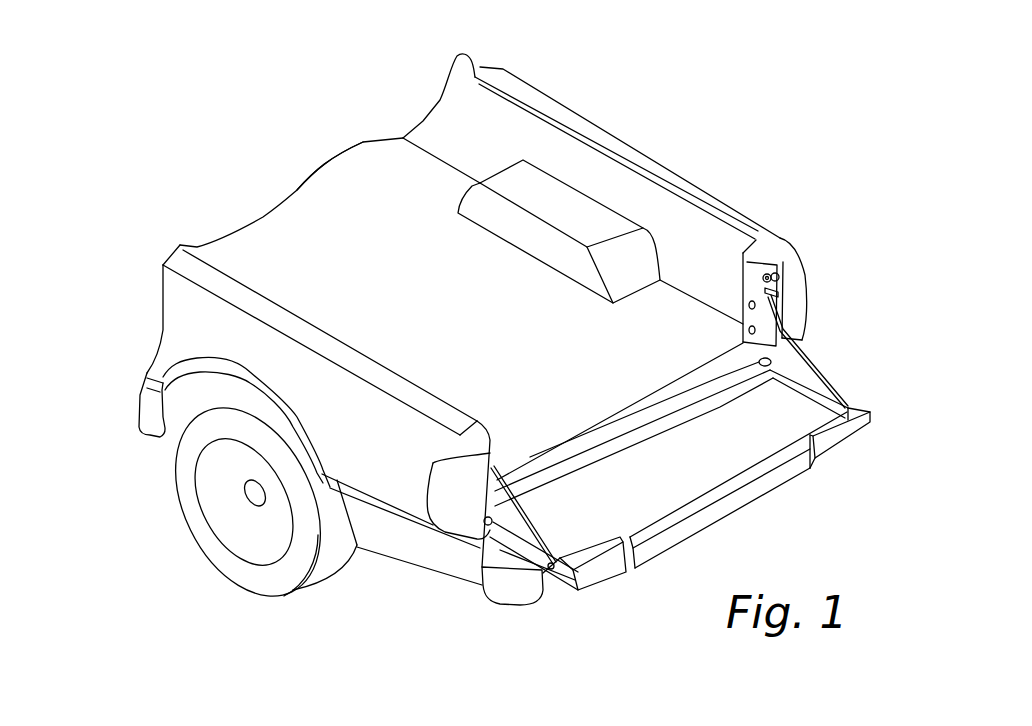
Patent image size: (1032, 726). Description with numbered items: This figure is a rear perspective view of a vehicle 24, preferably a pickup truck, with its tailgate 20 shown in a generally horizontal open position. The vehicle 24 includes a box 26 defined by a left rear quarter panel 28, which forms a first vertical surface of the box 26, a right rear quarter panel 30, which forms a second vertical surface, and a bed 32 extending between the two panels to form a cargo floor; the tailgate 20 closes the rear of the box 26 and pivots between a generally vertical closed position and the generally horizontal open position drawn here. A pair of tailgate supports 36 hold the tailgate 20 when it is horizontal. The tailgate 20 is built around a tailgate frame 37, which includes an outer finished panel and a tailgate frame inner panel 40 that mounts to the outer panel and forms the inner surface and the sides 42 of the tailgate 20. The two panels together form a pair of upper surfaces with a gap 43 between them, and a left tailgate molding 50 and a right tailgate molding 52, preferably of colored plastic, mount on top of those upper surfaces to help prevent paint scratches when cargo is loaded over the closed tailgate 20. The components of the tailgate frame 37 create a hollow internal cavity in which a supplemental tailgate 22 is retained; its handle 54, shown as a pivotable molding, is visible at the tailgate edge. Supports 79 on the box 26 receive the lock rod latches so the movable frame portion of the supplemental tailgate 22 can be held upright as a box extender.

The tailgate 20 is at (700, 534).
The supplemental tailgate 22 is at (811, 484).
The vehicle 24 is at (710, 153).
The box 26 is at (392, 262).
The left rear quarter panel 28 is at (163, 330).
The right rear quarter panel 30 is at (463, 56).
The bed 32 is at (330, 157).
The tailgate supports 36 is at (810, 373).
The tailgate frame 37 is at (558, 590).
The tailgate frame inner panel 40 is at (847, 402).
The sides 42 is at (540, 590).
The gap 43 is at (818, 455).
The left tailgate molding 50 is at (583, 588).
The right tailgate molding 52 is at (866, 428).
The handle 54 is at (723, 520).
The supports 79 is at (772, 272).